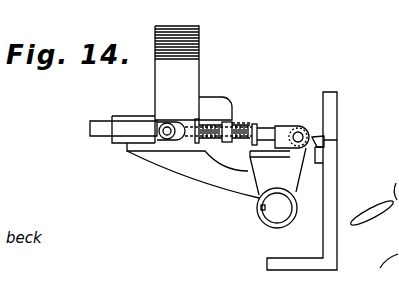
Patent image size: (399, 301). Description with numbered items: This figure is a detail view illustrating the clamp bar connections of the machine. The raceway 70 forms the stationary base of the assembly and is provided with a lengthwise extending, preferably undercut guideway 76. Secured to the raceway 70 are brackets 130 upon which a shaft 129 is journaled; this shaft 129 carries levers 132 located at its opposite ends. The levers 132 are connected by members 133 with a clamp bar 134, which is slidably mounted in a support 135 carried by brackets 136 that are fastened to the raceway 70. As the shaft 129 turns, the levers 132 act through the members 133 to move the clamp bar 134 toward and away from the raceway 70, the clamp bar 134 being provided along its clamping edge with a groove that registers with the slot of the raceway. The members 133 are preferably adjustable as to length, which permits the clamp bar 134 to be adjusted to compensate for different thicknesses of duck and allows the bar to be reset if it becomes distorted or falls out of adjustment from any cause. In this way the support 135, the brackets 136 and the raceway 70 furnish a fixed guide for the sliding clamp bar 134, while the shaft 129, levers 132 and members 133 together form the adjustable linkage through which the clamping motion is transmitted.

The support 135 is at (129, 104).
The clamp bar 134 is at (103, 131).
The brackets 136 is at (148, 151).
The members 133 is at (263, 134).
The brackets 130 is at (262, 183).
The shaft 129 is at (275, 210).
The levers 132 is at (318, 172).
The guideway 76 is at (338, 142).
The raceway 70 is at (328, 218).